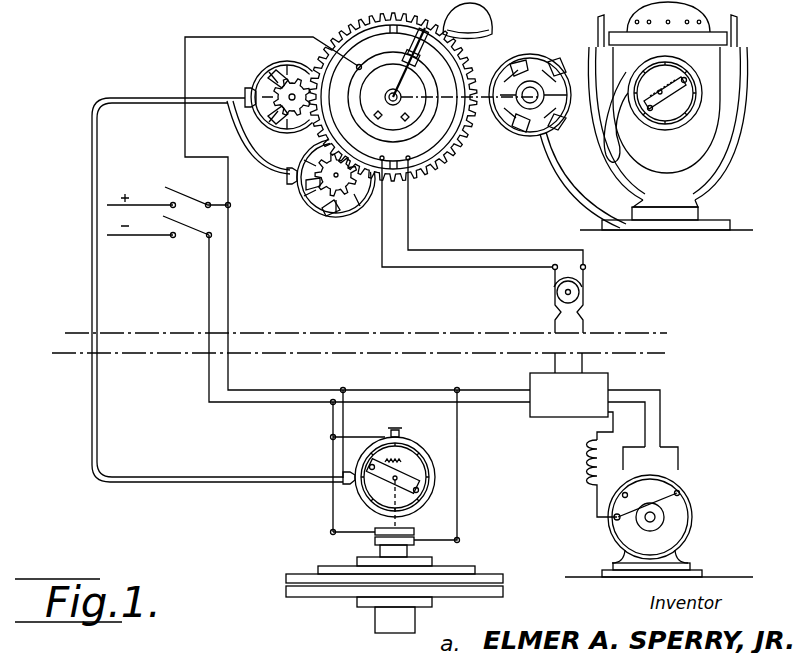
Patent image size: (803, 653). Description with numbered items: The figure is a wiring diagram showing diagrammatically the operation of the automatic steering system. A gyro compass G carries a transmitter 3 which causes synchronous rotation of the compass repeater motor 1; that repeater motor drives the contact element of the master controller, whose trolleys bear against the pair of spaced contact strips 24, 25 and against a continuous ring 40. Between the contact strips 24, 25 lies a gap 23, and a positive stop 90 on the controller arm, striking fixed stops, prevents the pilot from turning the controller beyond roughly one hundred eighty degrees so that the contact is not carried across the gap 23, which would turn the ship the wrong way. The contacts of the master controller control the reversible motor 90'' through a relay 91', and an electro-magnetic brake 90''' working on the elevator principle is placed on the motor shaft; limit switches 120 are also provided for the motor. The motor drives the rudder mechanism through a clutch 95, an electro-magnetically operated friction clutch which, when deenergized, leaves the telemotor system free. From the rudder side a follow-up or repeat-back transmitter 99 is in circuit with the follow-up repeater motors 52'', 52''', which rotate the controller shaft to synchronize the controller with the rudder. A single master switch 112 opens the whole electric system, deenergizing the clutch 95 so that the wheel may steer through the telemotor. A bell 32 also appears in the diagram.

The repeater motor 1 is at (513, 132).
The transmitter 3 is at (665, 93).
The gyro compass G is at (667, 115).
The gap 23 is at (397, 168).
The contact strip 24 is at (358, 40).
The contact strip 25 is at (437, 139).
The bell 32 is at (493, 19).
The continuous ring 40 is at (430, 78).
The positive stop 90 is at (398, 66).
The reversible motor 90'' is at (674, 526).
The electro-magnetic brake 90''' is at (587, 480).
The relay 91' is at (589, 388).
The clutch 95 is at (391, 580).
The follow-up transmitter 99 is at (401, 480).
The master switch 112 is at (184, 231).
The limit switches 120 is at (591, 301).
The follow-up repeater motor 52'' is at (301, 173).
The follow-up repeater motor 52''' is at (267, 94).